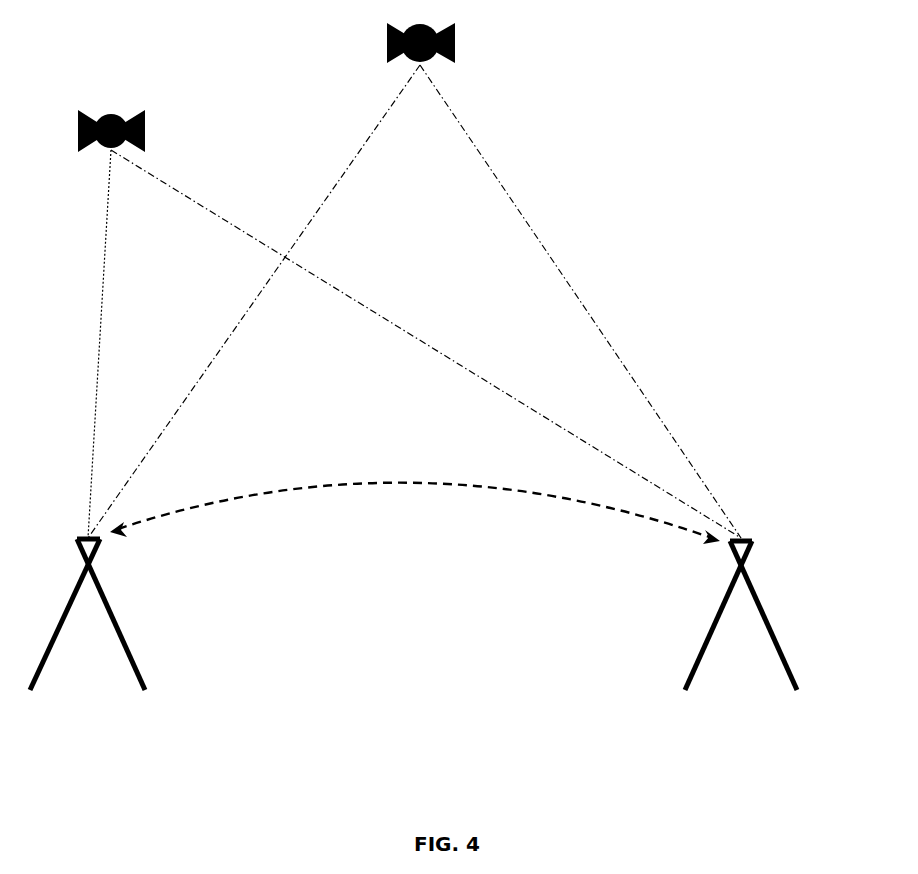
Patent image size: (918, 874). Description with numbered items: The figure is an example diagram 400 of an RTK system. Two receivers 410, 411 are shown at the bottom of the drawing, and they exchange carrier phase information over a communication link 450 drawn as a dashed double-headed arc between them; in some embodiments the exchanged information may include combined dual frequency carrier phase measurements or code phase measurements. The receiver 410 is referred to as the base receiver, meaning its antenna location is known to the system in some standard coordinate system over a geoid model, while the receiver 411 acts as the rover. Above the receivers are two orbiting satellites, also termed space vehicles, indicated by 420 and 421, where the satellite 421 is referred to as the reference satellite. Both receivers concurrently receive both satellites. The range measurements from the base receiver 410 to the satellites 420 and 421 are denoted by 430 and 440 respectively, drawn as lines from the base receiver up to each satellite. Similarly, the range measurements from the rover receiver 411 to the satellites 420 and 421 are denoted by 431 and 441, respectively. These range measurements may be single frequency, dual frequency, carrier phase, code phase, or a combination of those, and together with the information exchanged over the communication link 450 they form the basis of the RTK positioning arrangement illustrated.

The example diagram of an RTK system 400 is at (785, 163).
The base receiver 410 is at (102, 546).
The receiver 411 is at (754, 548).
The satellite 420 is at (105, 110).
The reference satellite 421 is at (459, 50).
The range measurement from receiver 410 to satellite 420 430 is at (107, 202).
The range measurement from receiver 411 to satellite 420 431 is at (443, 358).
The range measurement from receiver 410 to satellite 421 440 is at (215, 355).
The range measurement from receiver 411 to satellite 421 441 is at (548, 253).
The communication link 450 is at (395, 488).